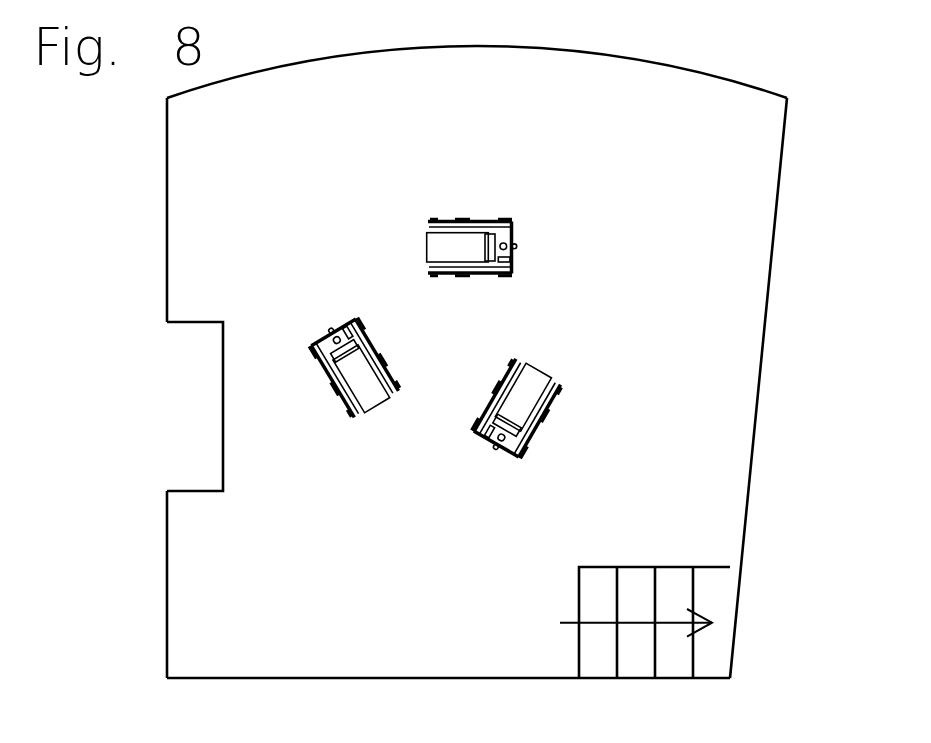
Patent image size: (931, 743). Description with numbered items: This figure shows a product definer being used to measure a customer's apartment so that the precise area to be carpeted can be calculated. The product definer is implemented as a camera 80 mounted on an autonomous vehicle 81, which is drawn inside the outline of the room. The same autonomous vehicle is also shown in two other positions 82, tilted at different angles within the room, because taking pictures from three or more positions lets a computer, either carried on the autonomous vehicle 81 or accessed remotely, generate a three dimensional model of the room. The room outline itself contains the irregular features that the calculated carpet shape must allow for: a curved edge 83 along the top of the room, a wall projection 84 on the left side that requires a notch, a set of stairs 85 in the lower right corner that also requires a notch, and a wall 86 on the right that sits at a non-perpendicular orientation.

The camera 80 is at (507, 243).
The autonomous vehicle 81 is at (476, 216).
The other positions of the autonomous vehicle 82 is at (370, 410).
The curved edge 83 is at (602, 55).
The wall projection 84 is at (223, 358).
The stairs 85 is at (578, 607).
The wall at a non-perpendicular orientation 86 is at (768, 275).